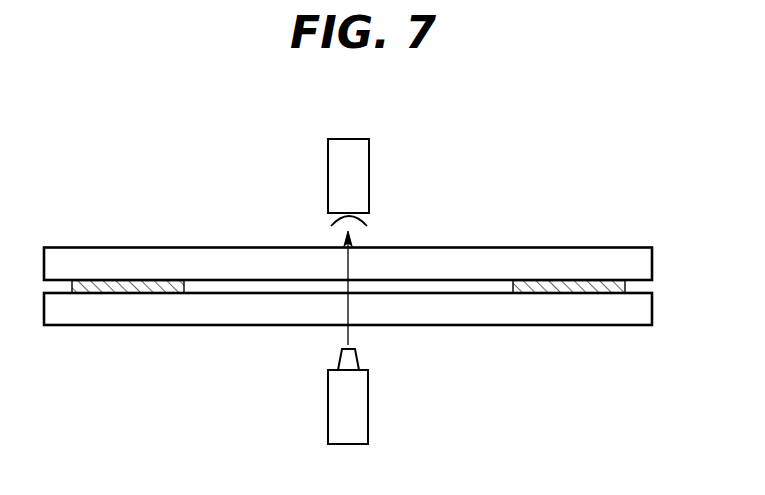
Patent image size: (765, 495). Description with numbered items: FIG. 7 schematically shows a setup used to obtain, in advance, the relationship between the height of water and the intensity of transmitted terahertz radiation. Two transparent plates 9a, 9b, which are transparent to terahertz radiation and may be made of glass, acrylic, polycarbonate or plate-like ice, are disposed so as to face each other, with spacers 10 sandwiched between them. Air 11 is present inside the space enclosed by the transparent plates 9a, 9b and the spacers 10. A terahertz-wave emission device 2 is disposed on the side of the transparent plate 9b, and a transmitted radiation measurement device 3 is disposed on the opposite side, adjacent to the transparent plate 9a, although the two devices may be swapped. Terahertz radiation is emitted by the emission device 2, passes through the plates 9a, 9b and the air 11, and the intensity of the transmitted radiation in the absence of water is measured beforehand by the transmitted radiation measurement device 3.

The terahertz-wave emission device 2 is at (357, 409).
The transmitted radiation measurement device 3 is at (356, 176).
The transparent plate 9a is at (640, 267).
The transparent plate 9b is at (640, 310).
The spacer 10 is at (575, 287).
The air 11 is at (470, 287).